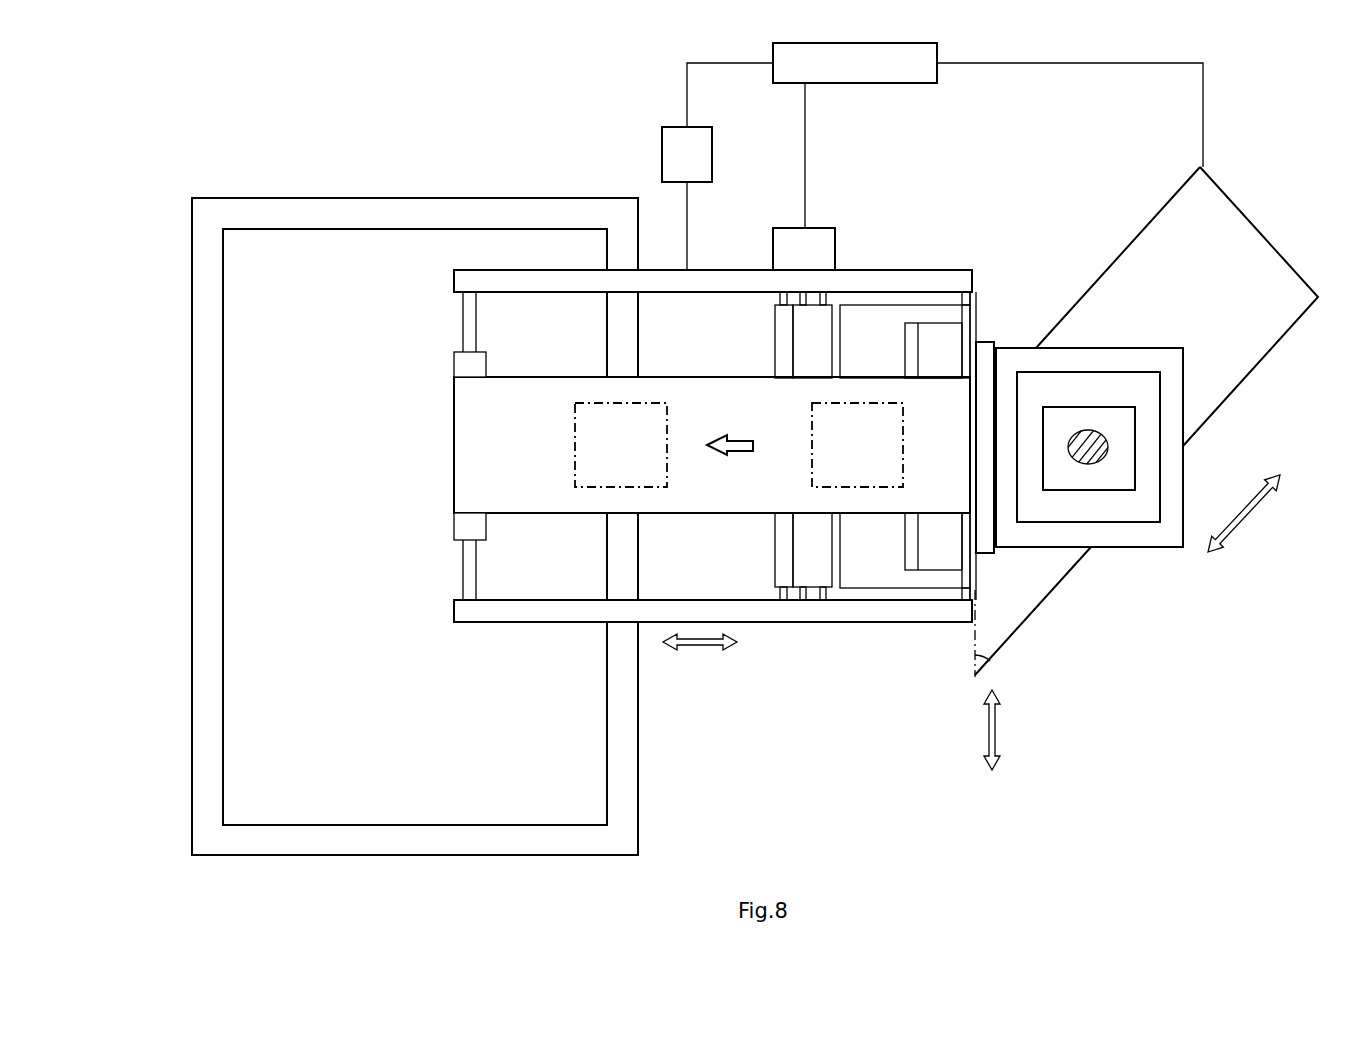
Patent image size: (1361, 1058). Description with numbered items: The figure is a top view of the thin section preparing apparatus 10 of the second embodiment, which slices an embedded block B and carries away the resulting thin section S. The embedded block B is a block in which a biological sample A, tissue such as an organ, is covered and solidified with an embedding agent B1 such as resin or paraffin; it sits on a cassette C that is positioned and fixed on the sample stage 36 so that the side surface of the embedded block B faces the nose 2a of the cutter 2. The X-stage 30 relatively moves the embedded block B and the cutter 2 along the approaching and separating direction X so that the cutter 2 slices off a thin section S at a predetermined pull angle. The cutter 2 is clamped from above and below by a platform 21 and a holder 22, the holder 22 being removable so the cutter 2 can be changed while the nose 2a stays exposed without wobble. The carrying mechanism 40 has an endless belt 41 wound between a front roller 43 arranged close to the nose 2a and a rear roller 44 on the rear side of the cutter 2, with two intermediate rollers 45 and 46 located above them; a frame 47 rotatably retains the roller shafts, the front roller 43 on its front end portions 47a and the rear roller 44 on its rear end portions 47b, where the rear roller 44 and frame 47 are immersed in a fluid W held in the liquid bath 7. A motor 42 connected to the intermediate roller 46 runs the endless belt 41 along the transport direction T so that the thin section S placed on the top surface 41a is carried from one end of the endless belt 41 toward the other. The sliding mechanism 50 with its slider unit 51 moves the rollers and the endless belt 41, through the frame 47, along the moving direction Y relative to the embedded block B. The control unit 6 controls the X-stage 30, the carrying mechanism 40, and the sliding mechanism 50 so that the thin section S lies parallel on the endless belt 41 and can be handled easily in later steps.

The thin section preparing apparatus 10 is at (1276, 128).
The liquid bath 7 is at (270, 205).
The fluid W is at (347, 250).
The control unit 6 is at (868, 75).
The sliding mechanism 50 is at (646, 165).
The slider unit 51 is at (668, 140).
The motor 42 is at (787, 236).
The endless belt 41 is at (720, 396).
The top surface 41a is at (885, 390).
The carrying mechanism 40 is at (675, 455).
The rear roller 44 is at (460, 370).
The intermediate roller 45 is at (806, 590).
The intermediate roller 46 is at (782, 590).
The frame 47 is at (848, 612).
The front end portions 47a is at (963, 612).
The rear end portions 47b is at (468, 608).
The platform 21 is at (860, 332).
The holder 22 is at (935, 335).
The front roller 43 is at (957, 322).
The thin section S is at (575, 432).
The cutter 2 is at (985, 342).
The nose 2a is at (1008, 346).
The X-stage 30 is at (1208, 405).
The sample stage 36 is at (1115, 548).
The embedding agent B1 is at (1118, 415).
The embedded block B is at (1076, 404).
The cassette C is at (1098, 372).
The biological sample A is at (1076, 440).
The transport direction T is at (700, 656).
The approaching and separating direction X is at (1244, 519).
The moving direction Y is at (998, 730).